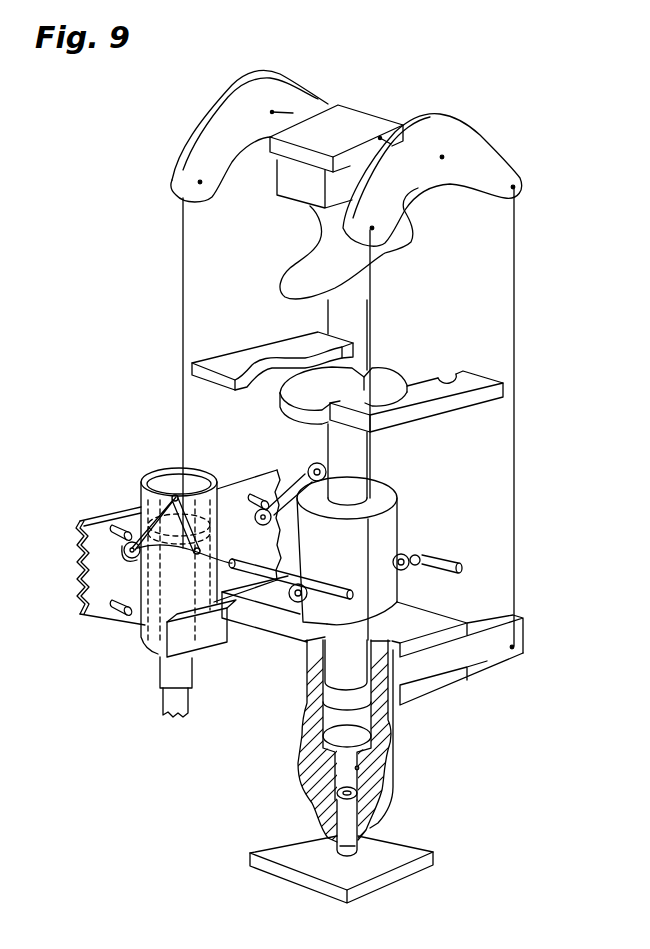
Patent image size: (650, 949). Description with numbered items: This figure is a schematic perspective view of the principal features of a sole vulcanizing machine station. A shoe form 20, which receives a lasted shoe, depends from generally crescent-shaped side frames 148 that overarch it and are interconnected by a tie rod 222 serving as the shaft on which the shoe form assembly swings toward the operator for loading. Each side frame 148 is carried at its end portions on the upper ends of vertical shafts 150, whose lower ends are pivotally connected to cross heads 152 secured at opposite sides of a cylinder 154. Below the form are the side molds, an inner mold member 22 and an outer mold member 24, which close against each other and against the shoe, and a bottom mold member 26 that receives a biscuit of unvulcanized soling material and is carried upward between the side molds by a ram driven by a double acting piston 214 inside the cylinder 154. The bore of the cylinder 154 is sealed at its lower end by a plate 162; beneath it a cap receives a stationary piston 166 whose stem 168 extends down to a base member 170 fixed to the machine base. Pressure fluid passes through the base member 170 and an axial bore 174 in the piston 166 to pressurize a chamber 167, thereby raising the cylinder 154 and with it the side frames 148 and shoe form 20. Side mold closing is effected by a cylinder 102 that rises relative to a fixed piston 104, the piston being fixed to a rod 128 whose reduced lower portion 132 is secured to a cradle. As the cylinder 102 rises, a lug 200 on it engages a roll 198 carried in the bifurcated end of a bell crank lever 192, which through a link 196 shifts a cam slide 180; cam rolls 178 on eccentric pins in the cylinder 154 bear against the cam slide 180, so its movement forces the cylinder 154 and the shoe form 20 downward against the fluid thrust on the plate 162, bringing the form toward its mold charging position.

The shoe form 20 is at (296, 262).
The inner mold member 22 is at (275, 352).
The outer mold member 24 is at (478, 388).
The bottom mold member 26 is at (388, 374).
The cylinder 102 is at (150, 477).
The piston 104 is at (197, 465).
The rod 128 is at (160, 674).
The lower portion of the piston rod 132 is at (163, 703).
The side frame 148 is at (208, 122).
The vertical shaft 150 is at (183, 311).
The cross head 152 is at (488, 655).
The cylinder 154 is at (400, 518).
The plate 162 is at (330, 742).
The stationary piston 166 is at (310, 800).
The chamber 167 is at (358, 769).
The stem 168 is at (347, 853).
The base member 170 is at (430, 840).
The axial bore 174 is at (337, 792).
The cam roll 178 is at (295, 606).
The cam slide 180 is at (352, 576).
The bell crank lever 192 is at (158, 513).
The link 196 is at (232, 560).
The roll 198 is at (128, 558).
The lug 200 is at (122, 616).
The double acting piston 214 is at (330, 700).
The tie rod 222 is at (293, 113).